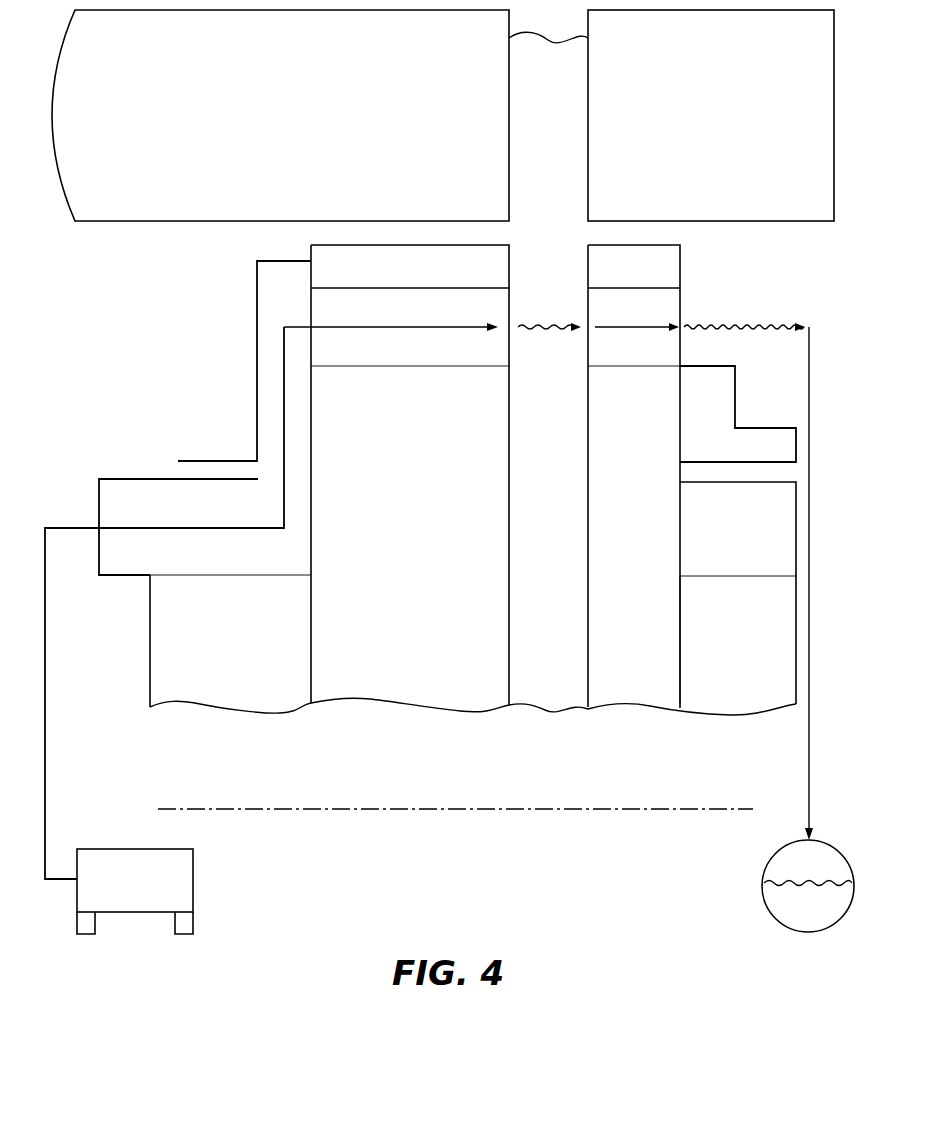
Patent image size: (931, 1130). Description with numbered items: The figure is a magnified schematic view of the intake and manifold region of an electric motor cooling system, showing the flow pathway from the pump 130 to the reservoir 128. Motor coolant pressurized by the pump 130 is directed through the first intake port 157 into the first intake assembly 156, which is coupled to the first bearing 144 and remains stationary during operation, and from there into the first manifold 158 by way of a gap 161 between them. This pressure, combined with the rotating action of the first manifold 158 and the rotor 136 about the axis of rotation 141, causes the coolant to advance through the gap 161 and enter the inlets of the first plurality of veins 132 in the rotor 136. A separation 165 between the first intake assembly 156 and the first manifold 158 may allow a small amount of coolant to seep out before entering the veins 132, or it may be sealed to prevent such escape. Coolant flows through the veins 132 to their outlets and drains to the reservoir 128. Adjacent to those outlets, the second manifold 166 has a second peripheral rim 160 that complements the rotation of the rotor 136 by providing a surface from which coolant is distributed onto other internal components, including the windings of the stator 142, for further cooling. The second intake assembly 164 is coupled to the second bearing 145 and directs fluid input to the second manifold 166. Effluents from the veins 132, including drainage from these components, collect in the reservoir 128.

The stator 142 is at (338, 127).
The first plurality of veins 132 is at (432, 320).
The rotor 136 is at (431, 522).
The gap 161 is at (300, 393).
The first manifold 158 is at (282, 278).
The separation 165 is at (183, 471).
The first intake port 157 is at (98, 503).
The first intake assembly 156 is at (259, 563).
The first bearing 144 is at (282, 658).
The second peripheral rim 160 is at (716, 362).
The second manifold 166 is at (790, 446).
The second intake assembly 164 is at (757, 540).
The second bearing 145 is at (757, 660).
The axis of rotation 141 is at (683, 807).
The pump 130 is at (156, 892).
The reservoir 128 is at (828, 917).